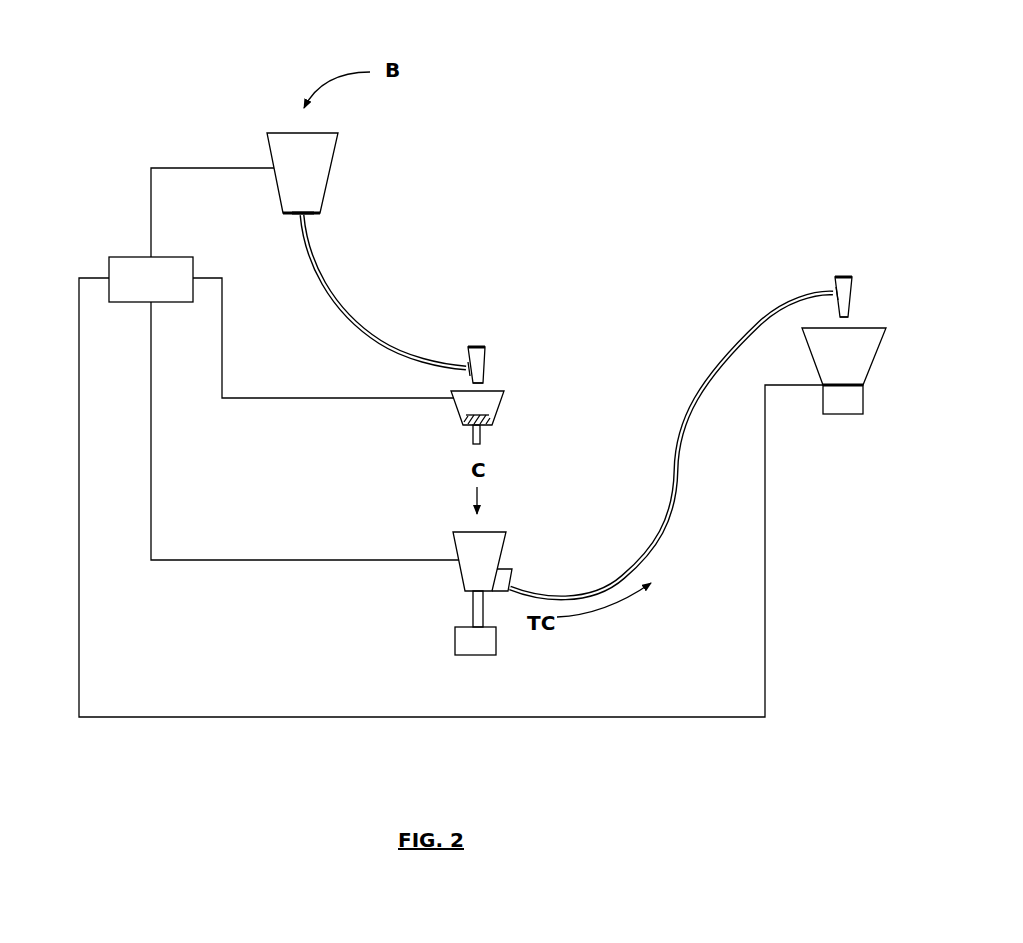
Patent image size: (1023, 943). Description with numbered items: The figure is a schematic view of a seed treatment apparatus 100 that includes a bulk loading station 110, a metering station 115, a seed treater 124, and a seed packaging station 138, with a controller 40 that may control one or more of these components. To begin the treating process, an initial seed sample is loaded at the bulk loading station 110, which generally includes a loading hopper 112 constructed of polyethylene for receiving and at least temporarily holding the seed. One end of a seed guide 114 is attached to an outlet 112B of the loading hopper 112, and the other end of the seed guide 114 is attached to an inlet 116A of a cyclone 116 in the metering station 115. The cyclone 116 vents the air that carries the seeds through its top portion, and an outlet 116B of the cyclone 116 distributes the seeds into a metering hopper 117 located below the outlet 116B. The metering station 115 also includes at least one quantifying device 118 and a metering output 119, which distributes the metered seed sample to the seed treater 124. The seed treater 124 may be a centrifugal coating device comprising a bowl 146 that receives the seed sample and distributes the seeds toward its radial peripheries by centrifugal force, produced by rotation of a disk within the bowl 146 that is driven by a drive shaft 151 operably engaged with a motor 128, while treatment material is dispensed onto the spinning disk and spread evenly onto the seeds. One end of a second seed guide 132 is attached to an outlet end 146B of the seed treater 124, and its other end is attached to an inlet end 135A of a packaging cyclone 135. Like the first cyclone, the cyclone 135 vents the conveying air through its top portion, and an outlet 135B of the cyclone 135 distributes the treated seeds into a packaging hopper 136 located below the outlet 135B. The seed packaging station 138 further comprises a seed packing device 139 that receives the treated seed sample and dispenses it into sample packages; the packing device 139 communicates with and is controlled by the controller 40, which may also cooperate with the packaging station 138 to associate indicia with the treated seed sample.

The controller 40 is at (125, 260).
The seed treatment apparatus 100 is at (682, 118).
The bulk loading station 110 is at (382, 166).
The loading hopper 112 is at (280, 155).
The outlet 112B is at (310, 215).
The seed guide 114 is at (345, 308).
The metering station 115 is at (430, 418).
The cyclone 116 is at (477, 355).
The inlet 116A is at (465, 368).
The outlet 116B is at (483, 386).
The metering hopper 117 is at (482, 403).
The quantifying device 118 is at (467, 420).
The metering output 119 is at (480, 435).
The seed treater 124 is at (535, 531).
The motor 128 is at (483, 643).
The seed guide 132 is at (677, 488).
The cyclone 135 is at (845, 293).
The inlet end 135A is at (835, 292).
The outlet 135B is at (848, 317).
The packaging hopper 136 is at (850, 358).
The seed packaging station 138 is at (905, 399).
The seed packing device 139 is at (845, 405).
The bowl 146 is at (473, 565).
The outlet end 146B is at (512, 588).
The drive shaft 151 is at (476, 605).